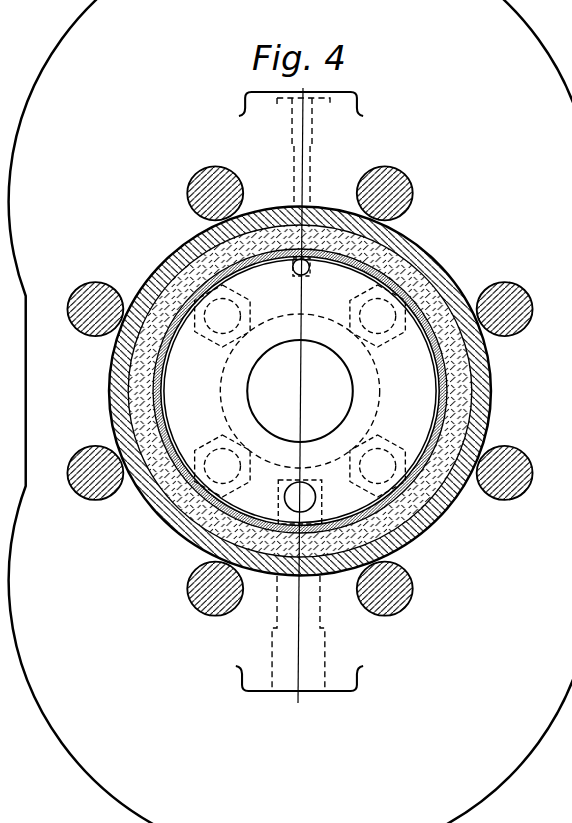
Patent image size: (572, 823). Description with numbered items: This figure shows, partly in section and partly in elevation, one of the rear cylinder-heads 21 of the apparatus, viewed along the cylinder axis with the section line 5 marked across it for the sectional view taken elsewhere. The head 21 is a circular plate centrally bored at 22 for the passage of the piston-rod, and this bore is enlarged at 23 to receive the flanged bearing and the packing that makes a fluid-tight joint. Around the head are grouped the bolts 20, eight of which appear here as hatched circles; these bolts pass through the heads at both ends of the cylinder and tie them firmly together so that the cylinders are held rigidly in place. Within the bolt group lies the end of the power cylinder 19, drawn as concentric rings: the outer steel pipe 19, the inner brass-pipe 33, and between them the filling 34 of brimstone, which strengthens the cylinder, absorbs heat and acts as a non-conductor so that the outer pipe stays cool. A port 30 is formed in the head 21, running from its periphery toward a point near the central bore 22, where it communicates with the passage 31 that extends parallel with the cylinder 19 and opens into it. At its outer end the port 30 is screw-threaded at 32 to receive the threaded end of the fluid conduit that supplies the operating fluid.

The section line 5— 5 is at (298, 396).
The power cylinder 19 is at (424, 263).
The bolts 20 is at (107, 282).
The rear cylinder-head 21 is at (450, 158).
The central bore 22 is at (300, 391).
The enlargement of bore 23 is at (320, 316).
The port 30 is at (277, 611).
The passage 31 is at (299, 502).
The screw-threaded outer end of port 32 is at (272, 678).
The inner brass-pipe 33 is at (438, 369).
The brimstone filling 34 is at (165, 506).